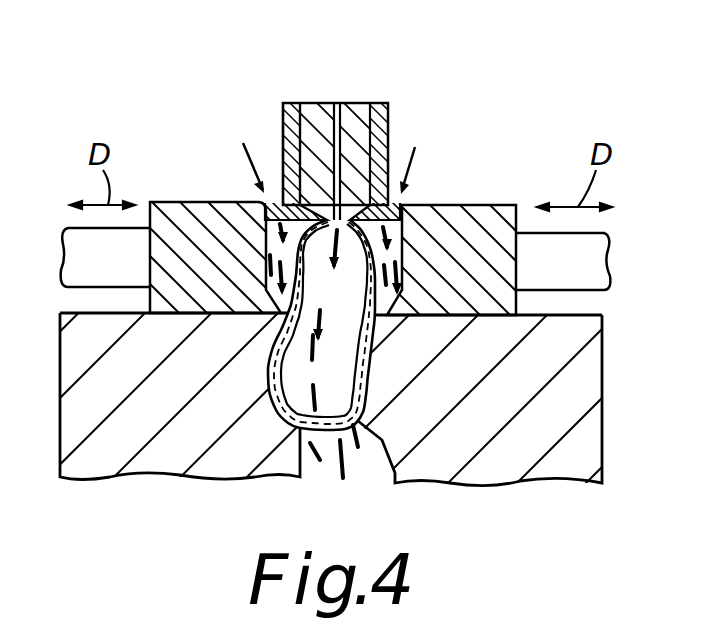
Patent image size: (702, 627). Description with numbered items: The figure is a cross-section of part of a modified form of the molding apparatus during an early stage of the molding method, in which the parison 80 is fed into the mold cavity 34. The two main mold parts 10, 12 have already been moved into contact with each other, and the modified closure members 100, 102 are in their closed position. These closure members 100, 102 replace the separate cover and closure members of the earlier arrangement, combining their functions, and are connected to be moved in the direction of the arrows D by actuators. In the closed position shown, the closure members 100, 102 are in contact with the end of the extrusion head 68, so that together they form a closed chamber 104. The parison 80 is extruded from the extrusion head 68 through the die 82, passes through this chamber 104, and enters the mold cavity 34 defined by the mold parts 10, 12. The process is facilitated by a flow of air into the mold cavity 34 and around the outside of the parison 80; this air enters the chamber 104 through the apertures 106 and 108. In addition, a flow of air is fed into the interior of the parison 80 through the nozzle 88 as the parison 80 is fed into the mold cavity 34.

The main mold part 10 is at (140, 428).
The main mold part 12 is at (570, 450).
The mold cavity 34 is at (365, 452).
The extrusion head 68 is at (362, 103).
The parison 80 is at (300, 455).
The die 82 is at (305, 103).
The nozzle 88 is at (340, 105).
The closure member 100 is at (187, 230).
The closure member 102 is at (480, 205).
The closed chamber 104 is at (273, 246).
The aperture 106 is at (263, 197).
The aperture 108 is at (400, 200).